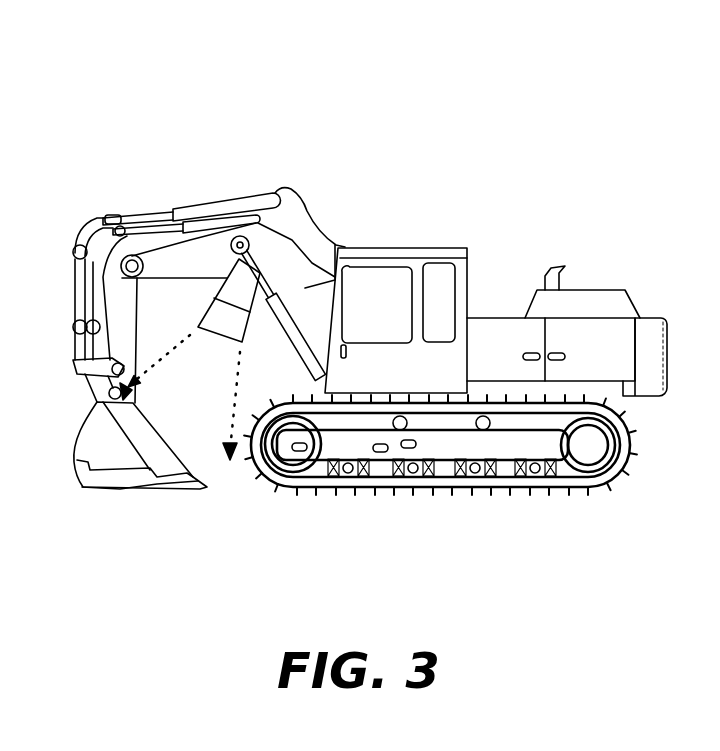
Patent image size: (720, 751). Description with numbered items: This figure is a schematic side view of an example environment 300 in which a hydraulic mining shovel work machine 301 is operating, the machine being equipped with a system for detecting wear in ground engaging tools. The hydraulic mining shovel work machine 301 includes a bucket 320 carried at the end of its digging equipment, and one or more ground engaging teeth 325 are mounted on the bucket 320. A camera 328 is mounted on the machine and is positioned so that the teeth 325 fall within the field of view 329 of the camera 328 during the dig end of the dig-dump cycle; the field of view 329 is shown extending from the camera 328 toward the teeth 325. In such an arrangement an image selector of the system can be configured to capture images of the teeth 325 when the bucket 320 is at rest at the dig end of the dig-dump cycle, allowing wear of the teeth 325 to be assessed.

The environment 300 is at (323, 41).
The hydraulic mining shovel work machine 301 is at (600, 226).
The bucket 320 is at (80, 477).
The ground engaging teeth 325 is at (200, 482).
The camera 328 is at (216, 312).
The field of view 329 is at (242, 373).